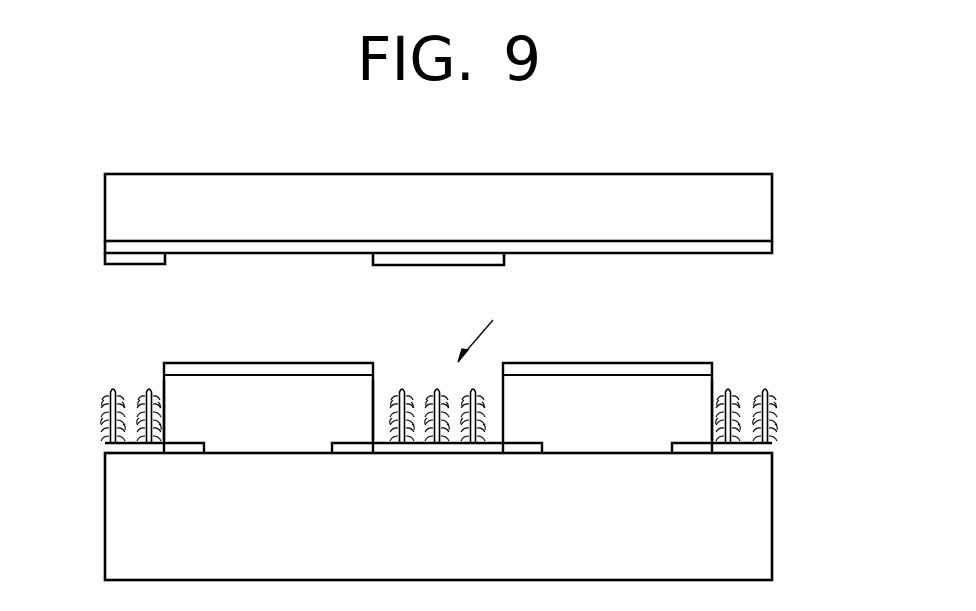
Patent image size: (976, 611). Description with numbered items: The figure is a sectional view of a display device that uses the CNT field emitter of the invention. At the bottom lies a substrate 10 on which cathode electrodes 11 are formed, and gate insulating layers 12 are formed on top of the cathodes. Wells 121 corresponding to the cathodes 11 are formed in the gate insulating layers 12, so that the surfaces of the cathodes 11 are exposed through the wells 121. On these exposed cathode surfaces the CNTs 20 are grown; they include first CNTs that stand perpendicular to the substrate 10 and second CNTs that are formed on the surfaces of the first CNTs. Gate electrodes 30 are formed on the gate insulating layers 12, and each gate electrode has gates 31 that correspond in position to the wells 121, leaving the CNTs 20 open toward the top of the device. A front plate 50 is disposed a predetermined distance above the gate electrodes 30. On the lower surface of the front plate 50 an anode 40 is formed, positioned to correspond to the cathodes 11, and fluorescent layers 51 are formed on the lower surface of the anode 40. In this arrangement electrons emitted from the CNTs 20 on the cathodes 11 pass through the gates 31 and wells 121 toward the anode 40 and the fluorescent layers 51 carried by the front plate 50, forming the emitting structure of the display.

The substrate 10 is at (772, 530).
The cathode electrode 11 is at (135, 444).
The gate insulating layer 12 is at (438, 408).
The well 121 is at (162, 383).
The CNT 20 is at (88, 388).
The gate electrode 30 is at (245, 363).
The gate 31 is at (375, 362).
The anode 40 is at (772, 247).
The front plate 50 is at (772, 207).
The fluorescent layer 51 is at (128, 266).